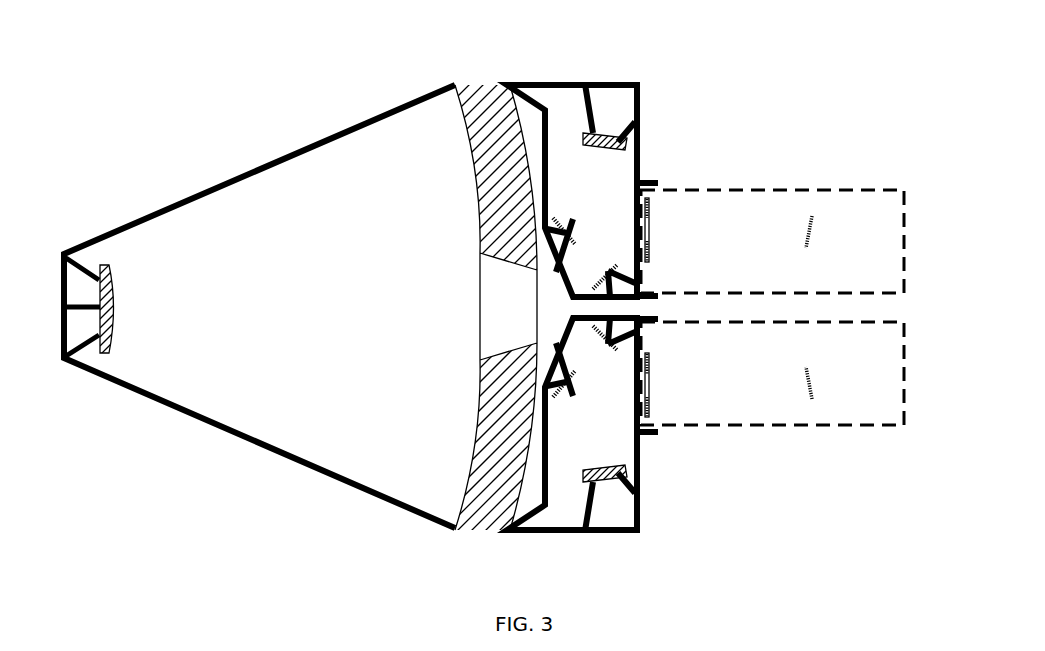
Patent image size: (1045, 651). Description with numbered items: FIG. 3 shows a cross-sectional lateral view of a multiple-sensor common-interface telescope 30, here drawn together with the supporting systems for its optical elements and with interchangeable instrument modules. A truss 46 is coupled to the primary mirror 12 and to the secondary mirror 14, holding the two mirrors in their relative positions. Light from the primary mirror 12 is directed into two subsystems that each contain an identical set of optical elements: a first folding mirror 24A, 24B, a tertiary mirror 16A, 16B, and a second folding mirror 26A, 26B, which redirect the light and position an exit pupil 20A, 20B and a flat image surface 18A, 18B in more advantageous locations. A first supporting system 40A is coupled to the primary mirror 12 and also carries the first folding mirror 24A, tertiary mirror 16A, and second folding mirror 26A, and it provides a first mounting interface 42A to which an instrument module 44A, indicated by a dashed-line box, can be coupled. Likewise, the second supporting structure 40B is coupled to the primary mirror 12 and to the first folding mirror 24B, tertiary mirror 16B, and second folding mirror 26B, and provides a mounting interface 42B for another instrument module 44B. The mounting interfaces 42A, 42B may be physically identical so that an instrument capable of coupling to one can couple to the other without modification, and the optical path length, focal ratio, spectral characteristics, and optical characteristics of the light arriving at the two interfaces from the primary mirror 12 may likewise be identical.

The multiple-sensor common-interface telescope 30 is at (384, 24).
The truss 46 is at (265, 163).
The secondary mirror 14 is at (112, 312).
The primary mirror 12 is at (475, 132).
The first supporting system 40A is at (605, 83).
The second supporting structure 40B is at (610, 533).
The first mounting interface 42A is at (651, 182).
The mounting interface 42B is at (642, 434).
The instrument module 44A is at (863, 189).
The instrument module 44B is at (865, 428).
The tertiary mirror 16A is at (603, 145).
The tertiary mirror 16B is at (603, 470).
The second folding mirror 26A is at (577, 233).
The second folding mirror 26B is at (574, 386).
The first folding mirror 24A is at (608, 270).
The first folding mirror 24B is at (608, 345).
The exit pupil 20A is at (650, 212).
The exit pupil 20B is at (650, 405).
The flat image surface 18A is at (812, 233).
The flat image surface 18B is at (812, 383).